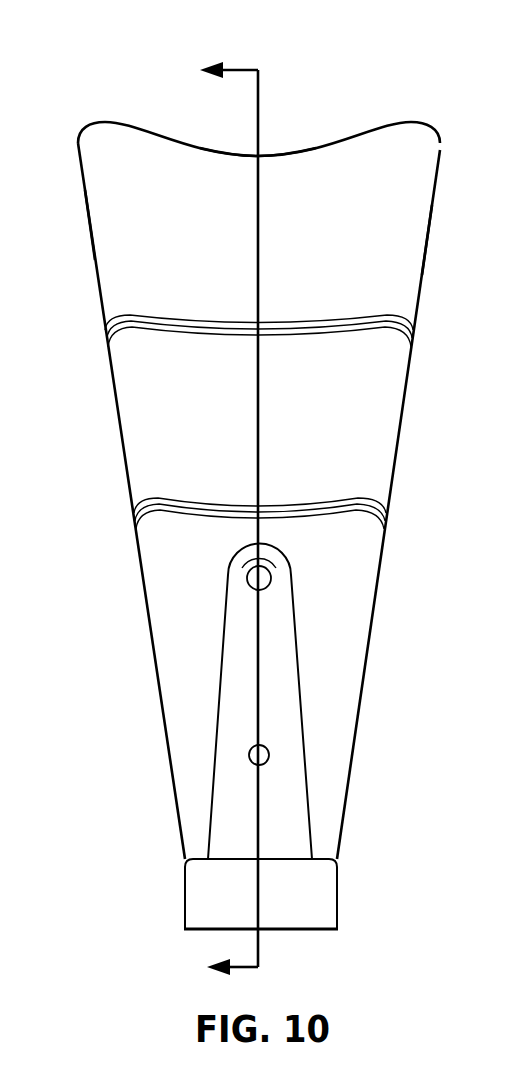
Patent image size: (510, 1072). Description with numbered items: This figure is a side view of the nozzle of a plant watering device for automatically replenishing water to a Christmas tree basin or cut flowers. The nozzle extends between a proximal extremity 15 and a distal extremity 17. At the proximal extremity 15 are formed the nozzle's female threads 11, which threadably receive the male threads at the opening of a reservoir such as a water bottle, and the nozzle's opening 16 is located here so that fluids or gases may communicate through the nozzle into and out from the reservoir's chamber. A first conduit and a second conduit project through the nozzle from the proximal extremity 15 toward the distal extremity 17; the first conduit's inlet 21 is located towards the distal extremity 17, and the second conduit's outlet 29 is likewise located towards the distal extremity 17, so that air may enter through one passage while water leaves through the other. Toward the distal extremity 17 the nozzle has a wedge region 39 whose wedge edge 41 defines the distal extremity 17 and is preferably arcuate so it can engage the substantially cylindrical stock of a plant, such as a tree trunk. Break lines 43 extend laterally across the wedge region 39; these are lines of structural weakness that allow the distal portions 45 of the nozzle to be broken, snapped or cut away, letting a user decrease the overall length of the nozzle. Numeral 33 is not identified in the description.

The female threads 11 is at (211, 518).
The proximal extremity 15 is at (185, 925).
The nozzle's opening 16 is at (295, 930).
The distal extremity 17 is at (411, 121).
The inlet of first conduit 21 is at (249, 755).
The outlet of second conduit 29 is at (247, 580).
The fastener holes 33 is at (272, 577).
The wedge region 39 is at (127, 222).
The wedge edge 41 is at (295, 151).
The break lines 43 is at (413, 333).
The distal portions 45 is at (397, 242).